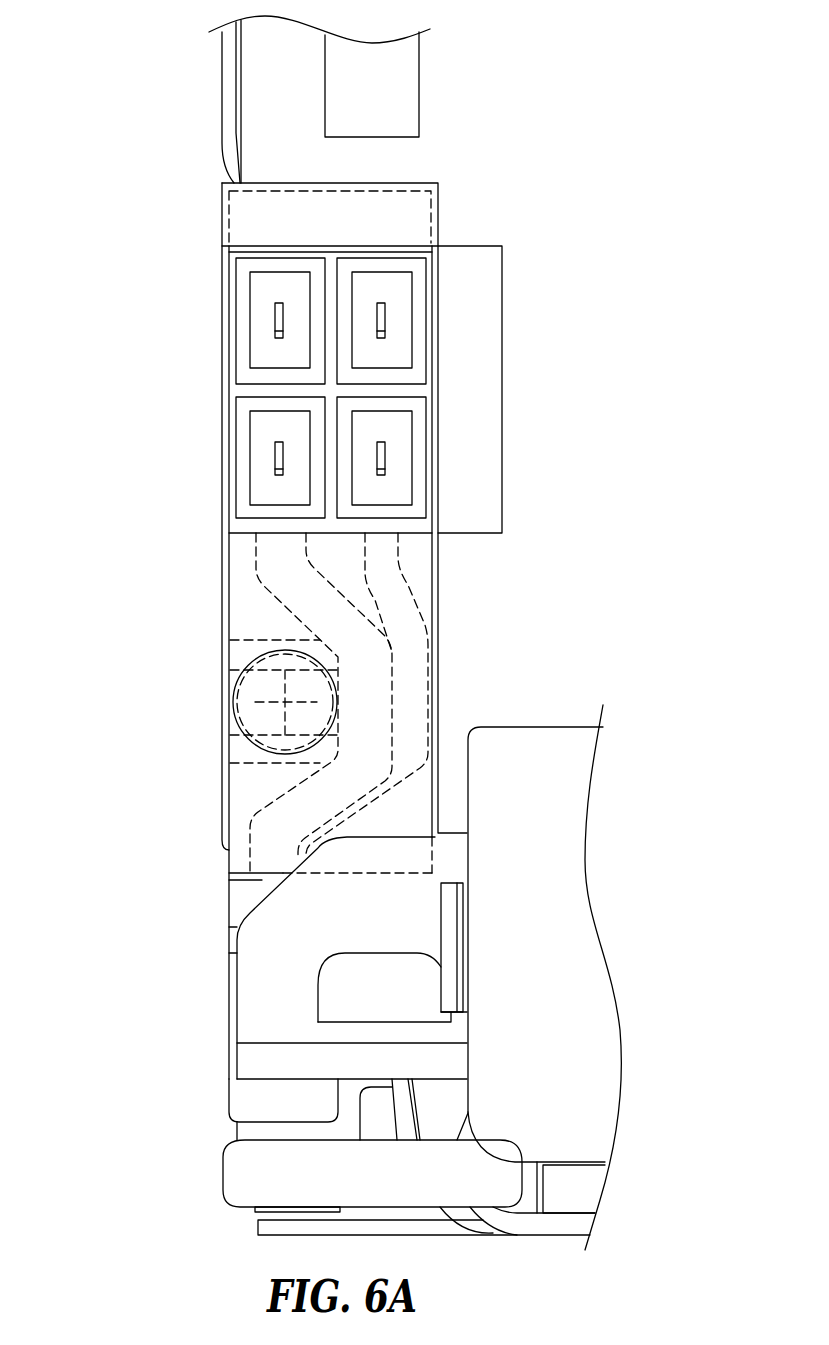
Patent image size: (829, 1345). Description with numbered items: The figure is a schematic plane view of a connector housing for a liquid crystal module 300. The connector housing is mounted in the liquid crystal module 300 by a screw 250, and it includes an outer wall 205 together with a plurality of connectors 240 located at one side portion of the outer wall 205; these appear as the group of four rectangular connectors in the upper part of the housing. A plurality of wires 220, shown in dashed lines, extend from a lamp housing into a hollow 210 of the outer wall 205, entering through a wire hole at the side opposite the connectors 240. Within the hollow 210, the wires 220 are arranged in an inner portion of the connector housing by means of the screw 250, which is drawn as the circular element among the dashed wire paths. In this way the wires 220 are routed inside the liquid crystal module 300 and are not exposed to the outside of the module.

The liquid crystal module 300 is at (162, 468).
The connectors 240 is at (249, 377).
The outer wall 205 is at (226, 550).
The hollow 210 is at (242, 603).
The wires 220 is at (377, 663).
The screw 250 is at (236, 738).